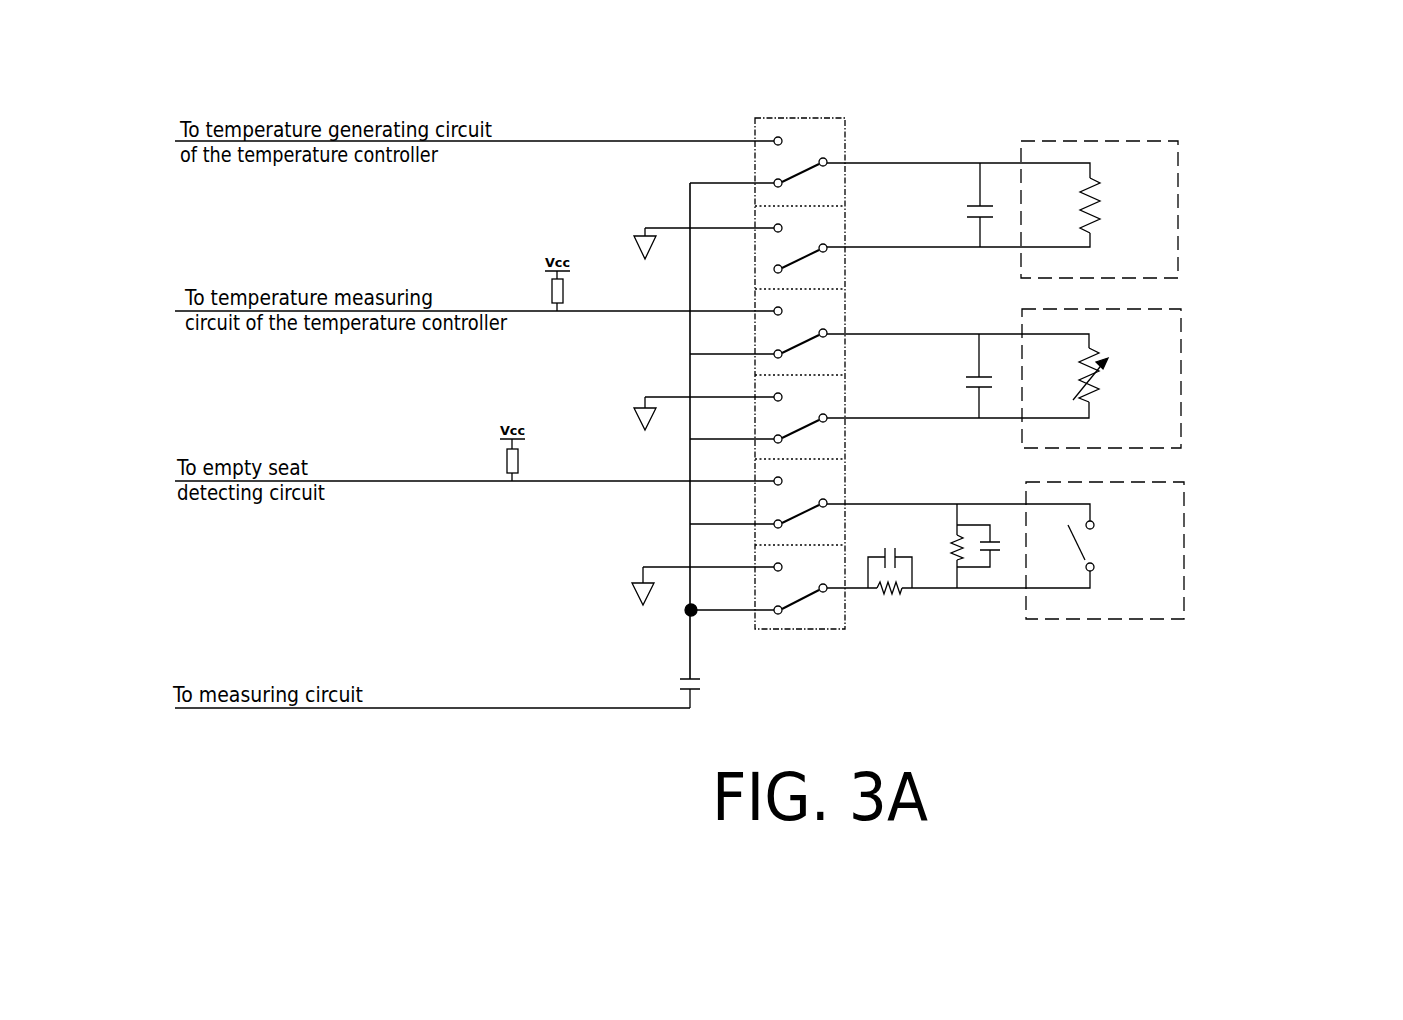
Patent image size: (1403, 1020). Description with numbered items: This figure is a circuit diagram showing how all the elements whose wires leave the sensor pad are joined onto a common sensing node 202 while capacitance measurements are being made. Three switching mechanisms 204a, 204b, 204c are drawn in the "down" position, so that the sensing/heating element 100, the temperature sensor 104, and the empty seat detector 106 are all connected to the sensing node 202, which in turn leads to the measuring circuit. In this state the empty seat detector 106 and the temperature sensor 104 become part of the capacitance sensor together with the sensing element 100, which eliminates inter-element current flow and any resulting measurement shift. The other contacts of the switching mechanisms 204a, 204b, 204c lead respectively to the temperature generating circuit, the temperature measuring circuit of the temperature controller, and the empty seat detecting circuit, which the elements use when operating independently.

The sensing/heating element 100 is at (1163, 210).
The temperature sensor 104 is at (1168, 381).
The empty seat detector 106 is at (1168, 558).
The sensing node 202 is at (686, 613).
The switching mechanism 204a is at (830, 142).
The switching mechanism 204b is at (835, 327).
The switching mechanism 204c is at (835, 490).